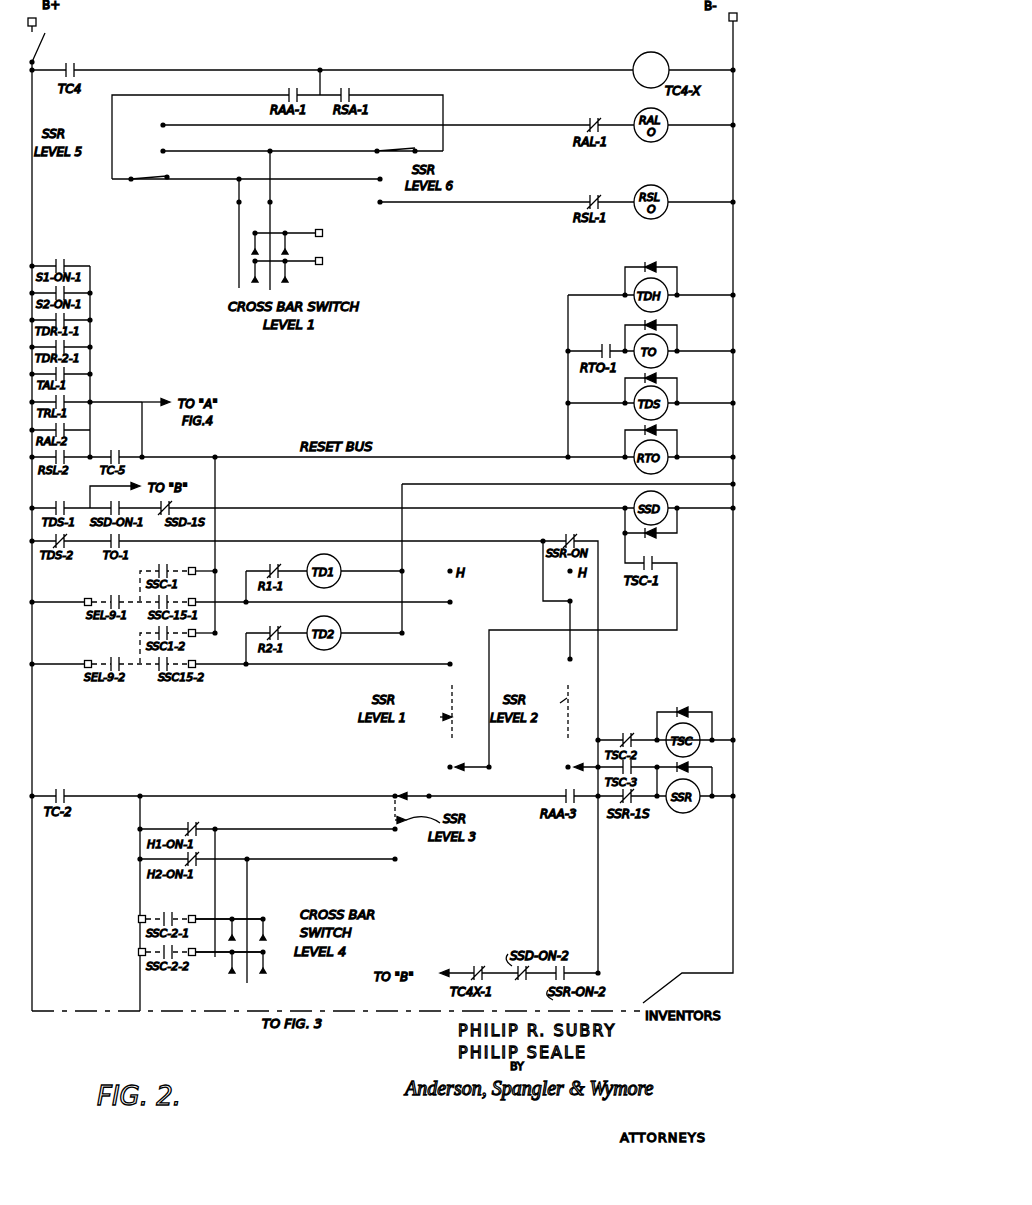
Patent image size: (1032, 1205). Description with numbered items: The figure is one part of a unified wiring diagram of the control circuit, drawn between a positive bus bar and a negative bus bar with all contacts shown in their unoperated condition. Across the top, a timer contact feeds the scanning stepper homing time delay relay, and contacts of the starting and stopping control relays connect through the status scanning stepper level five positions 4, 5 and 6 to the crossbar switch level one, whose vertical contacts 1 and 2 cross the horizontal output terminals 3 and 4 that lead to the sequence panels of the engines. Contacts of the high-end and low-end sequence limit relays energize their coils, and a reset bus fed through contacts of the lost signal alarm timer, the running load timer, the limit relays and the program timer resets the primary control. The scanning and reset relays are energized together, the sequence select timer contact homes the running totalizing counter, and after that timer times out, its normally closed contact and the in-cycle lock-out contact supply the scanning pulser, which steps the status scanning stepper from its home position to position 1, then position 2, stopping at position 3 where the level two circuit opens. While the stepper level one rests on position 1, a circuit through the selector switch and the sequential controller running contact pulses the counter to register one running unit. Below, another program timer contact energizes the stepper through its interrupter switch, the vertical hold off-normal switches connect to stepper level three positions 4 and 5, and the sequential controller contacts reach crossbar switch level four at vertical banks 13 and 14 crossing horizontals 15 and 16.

The crossbar switch contact position 1 / stepper position one 1 is at (416, 412).
The stepper position two 2 is at (432, 443).
The stepper position three 3 is at (449, 522).
The stepper position four 4 is at (277, 486).
The stepper position five 5 is at (278, 507).
The stepper position six 6 is at (264, 169).
The crossbar switch vertical bank contact 13 is at (227, 937).
The crossbar switch vertical bank contact 14 is at (258, 937).
The crossbar switch horizontal contact 15 is at (240, 931).
The crossbar switch horizontal contact 16 is at (240, 964).